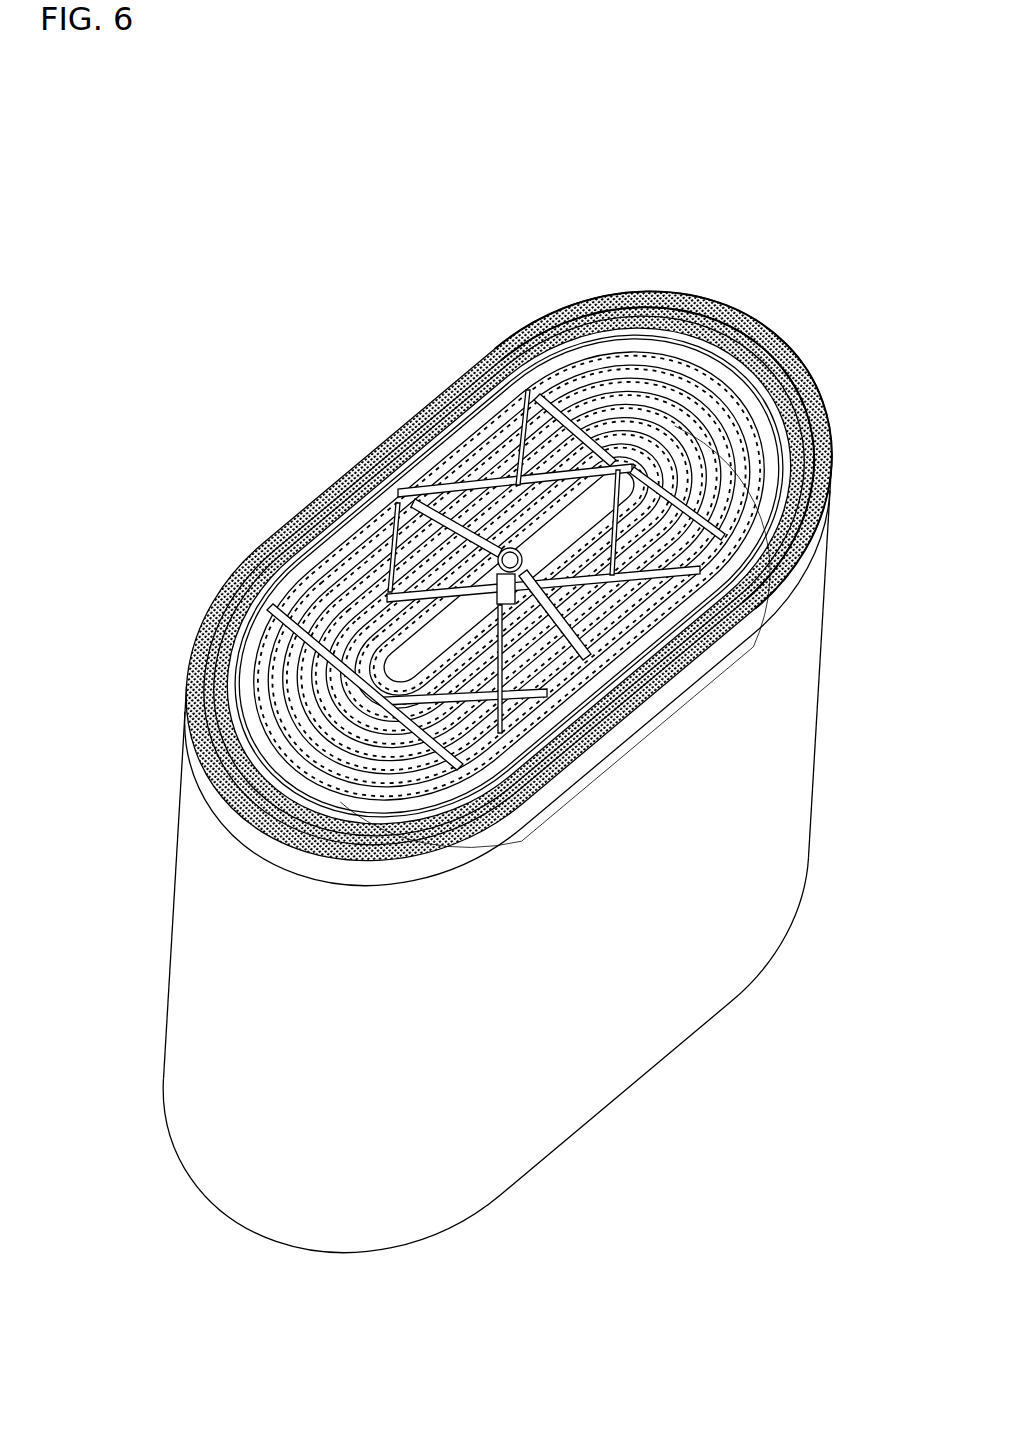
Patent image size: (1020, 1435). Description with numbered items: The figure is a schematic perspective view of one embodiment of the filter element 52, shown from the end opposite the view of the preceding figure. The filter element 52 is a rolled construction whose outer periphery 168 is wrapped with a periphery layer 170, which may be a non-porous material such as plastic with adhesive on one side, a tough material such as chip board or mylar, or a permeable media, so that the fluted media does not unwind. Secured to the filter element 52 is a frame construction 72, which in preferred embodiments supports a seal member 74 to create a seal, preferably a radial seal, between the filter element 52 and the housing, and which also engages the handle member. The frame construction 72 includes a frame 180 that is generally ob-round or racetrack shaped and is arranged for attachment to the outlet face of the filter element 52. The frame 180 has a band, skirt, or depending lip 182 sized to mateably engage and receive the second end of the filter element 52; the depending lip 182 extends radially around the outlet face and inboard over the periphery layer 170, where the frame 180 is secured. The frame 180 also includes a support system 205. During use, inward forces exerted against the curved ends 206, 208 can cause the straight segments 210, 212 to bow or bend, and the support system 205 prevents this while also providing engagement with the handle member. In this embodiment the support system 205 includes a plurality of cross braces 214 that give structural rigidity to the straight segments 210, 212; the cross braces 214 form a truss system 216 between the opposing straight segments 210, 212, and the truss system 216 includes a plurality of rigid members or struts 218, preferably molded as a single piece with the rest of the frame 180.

The filter element 52 is at (262, 330).
The frame construction 72 is at (380, 895).
The seal member 74 is at (509, 576).
The outer periphery 168 is at (808, 818).
The periphery layer 170 is at (803, 890).
The frame 180 is at (647, 733).
The depending lip 182 is at (827, 527).
The support system 205 is at (509, 576).
The curved end 206 is at (745, 318).
The curved end 208 is at (509, 576).
The straight segment 210 is at (509, 576).
The straight segment 212 is at (509, 576).
The cross braces 214 is at (597, 433).
The truss system 216 is at (695, 488).
The struts 218 is at (455, 487).